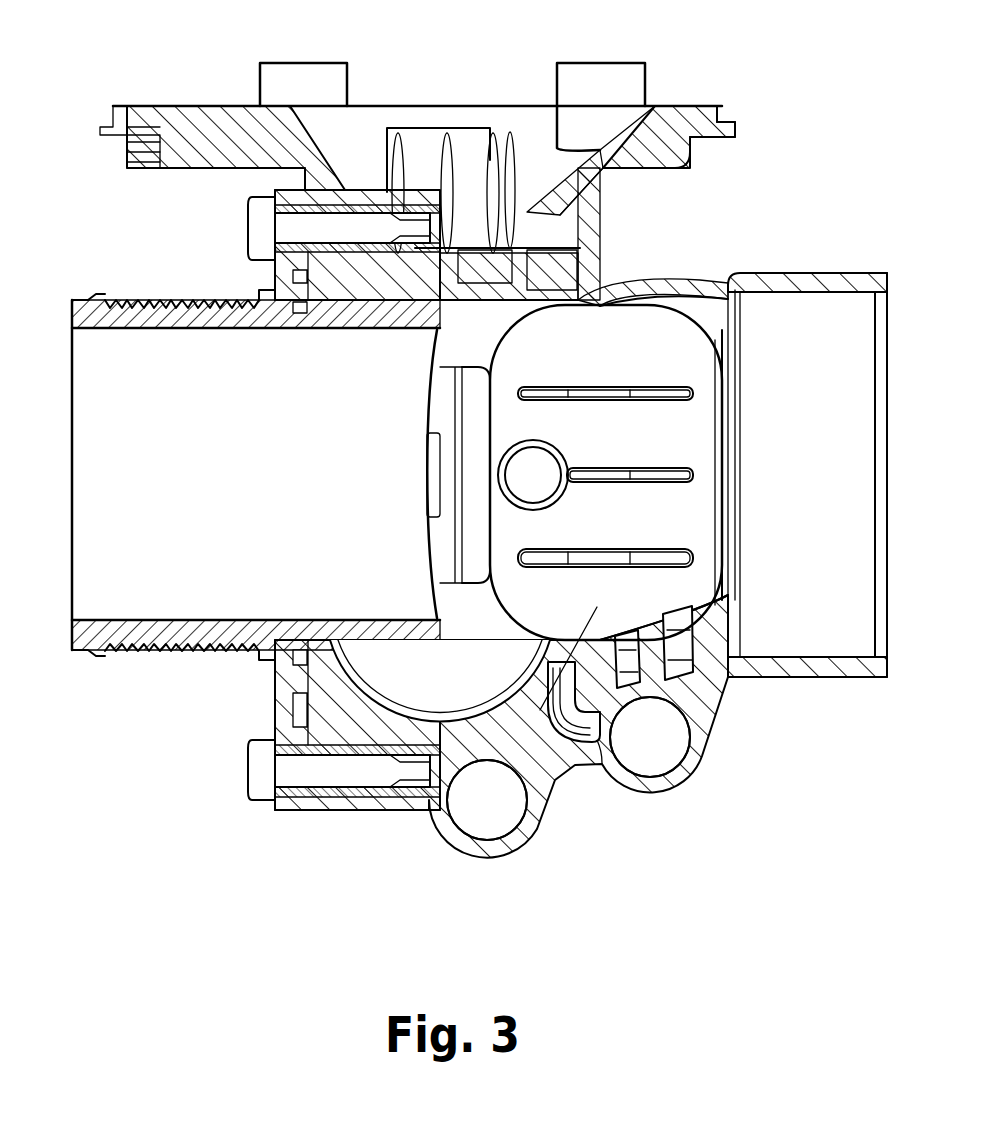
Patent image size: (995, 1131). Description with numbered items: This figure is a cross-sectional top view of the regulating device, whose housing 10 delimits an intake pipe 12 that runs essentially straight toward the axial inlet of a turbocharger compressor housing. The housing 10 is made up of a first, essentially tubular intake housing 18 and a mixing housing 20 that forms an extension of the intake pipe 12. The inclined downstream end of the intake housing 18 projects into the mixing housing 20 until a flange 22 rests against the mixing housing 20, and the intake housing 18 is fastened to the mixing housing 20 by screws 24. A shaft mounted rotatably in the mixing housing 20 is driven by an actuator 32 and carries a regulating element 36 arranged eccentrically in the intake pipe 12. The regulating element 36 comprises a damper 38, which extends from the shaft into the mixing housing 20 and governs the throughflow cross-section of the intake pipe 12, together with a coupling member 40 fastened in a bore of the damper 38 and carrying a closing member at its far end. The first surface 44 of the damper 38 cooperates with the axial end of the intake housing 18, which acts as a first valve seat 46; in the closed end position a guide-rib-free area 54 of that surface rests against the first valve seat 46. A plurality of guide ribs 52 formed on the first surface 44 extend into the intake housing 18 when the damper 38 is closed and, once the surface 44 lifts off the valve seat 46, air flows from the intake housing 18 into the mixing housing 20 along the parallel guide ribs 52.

The housing 10 is at (193, 249).
The intake pipe 12 is at (256, 474).
The intake housing 18 is at (160, 633).
The mixing housing 20 is at (605, 292).
The flange 22 is at (320, 740).
The screws 24 is at (297, 770).
The actuator 32 is at (667, 133).
The regulating element 36 is at (667, 320).
The damper 38 is at (657, 567).
The coupling member 40 is at (543, 488).
The first surface 44 is at (710, 665).
The first valve seat 46 is at (545, 718).
The guide ribs 52 is at (700, 475).
The guide-rib-free area 54 is at (523, 362).